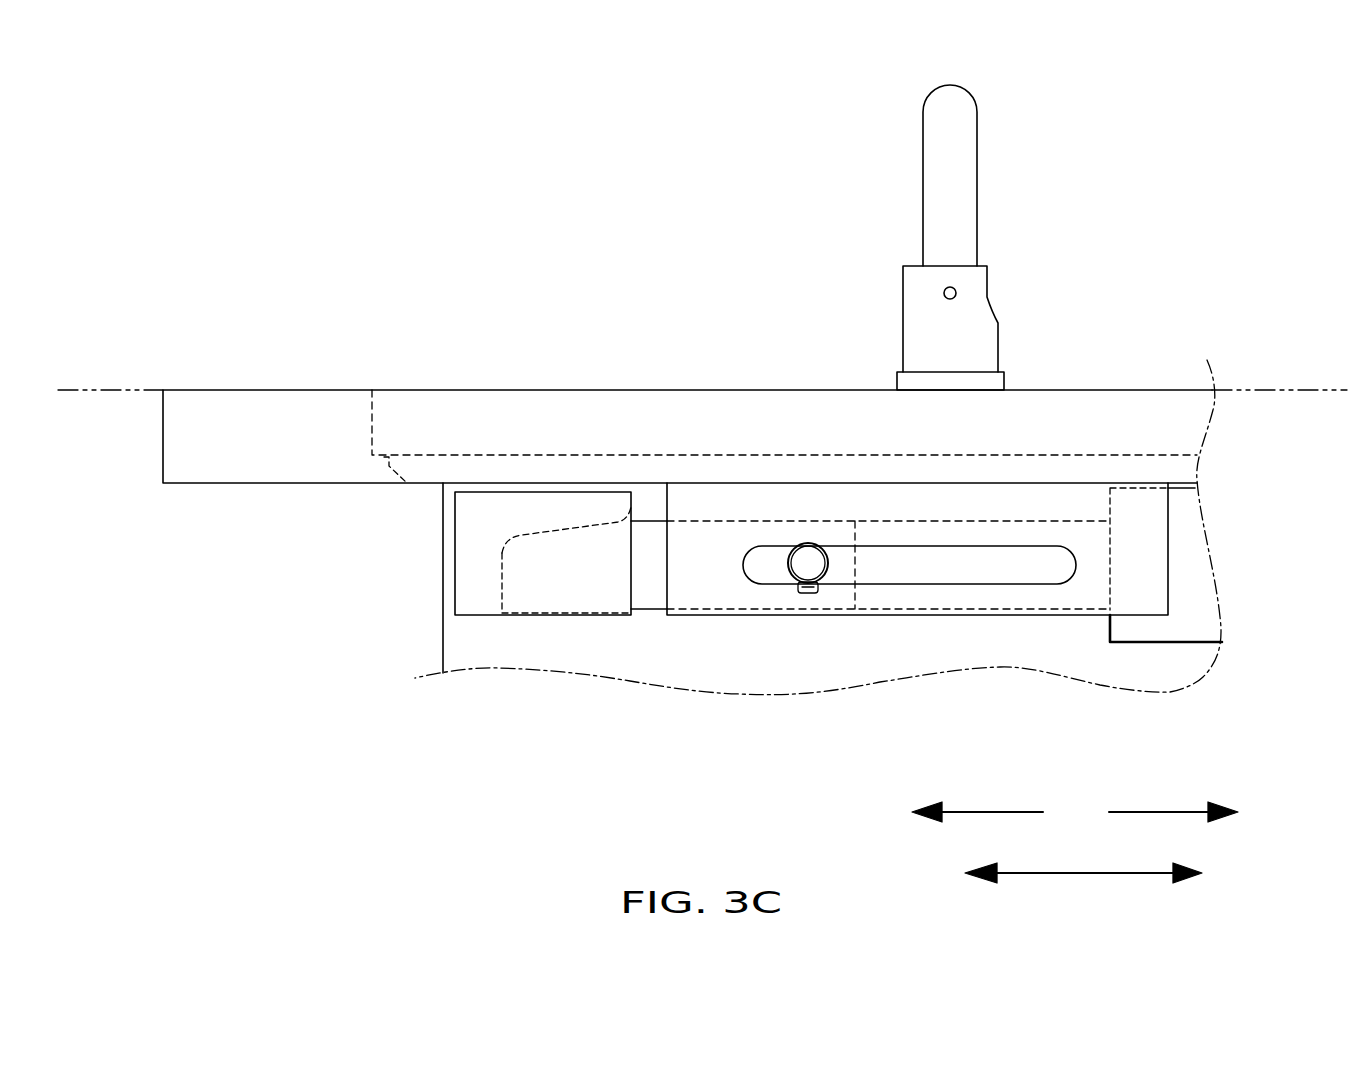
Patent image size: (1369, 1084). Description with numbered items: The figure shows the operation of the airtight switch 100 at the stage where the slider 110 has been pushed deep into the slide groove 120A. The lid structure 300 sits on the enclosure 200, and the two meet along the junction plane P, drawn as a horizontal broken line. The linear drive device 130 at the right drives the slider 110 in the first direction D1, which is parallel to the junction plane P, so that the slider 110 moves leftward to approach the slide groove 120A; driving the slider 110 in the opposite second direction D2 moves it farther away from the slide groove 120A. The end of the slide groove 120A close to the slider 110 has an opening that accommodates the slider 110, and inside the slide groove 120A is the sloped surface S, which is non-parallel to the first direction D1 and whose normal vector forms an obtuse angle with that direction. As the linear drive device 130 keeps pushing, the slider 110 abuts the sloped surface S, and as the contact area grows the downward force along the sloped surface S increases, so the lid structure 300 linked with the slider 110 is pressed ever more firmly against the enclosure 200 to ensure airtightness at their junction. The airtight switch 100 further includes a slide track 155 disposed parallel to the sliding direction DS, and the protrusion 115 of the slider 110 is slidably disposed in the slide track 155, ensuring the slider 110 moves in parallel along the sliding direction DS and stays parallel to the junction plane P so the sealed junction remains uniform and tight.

The airtight switch 100 is at (184, 127).
The enclosure 200 is at (222, 418).
The lid structure 300 is at (698, 389).
The junction plane P is at (1280, 390).
The slide groove 120A is at (477, 528).
The sloped surface S is at (540, 533).
The slider 110 is at (653, 585).
The protrusion 115 is at (810, 565).
The slide track 155 is at (925, 547).
The linear drive device 130 is at (1192, 613).
The first direction D1 is at (977, 798).
The second direction D2 is at (1173, 798).
The sliding direction DS is at (1083, 859).